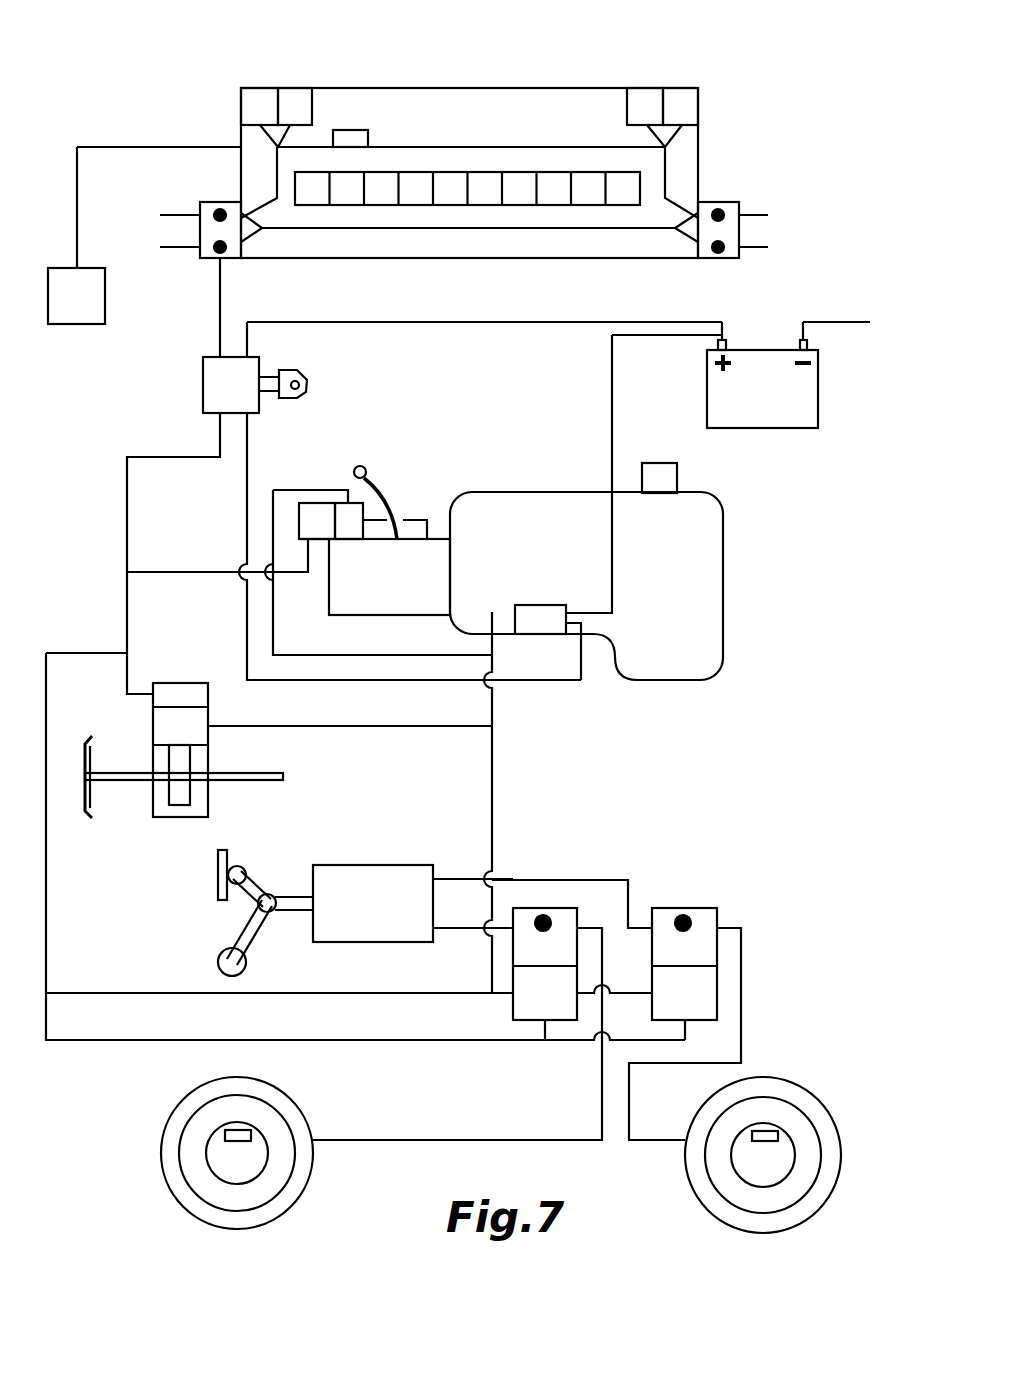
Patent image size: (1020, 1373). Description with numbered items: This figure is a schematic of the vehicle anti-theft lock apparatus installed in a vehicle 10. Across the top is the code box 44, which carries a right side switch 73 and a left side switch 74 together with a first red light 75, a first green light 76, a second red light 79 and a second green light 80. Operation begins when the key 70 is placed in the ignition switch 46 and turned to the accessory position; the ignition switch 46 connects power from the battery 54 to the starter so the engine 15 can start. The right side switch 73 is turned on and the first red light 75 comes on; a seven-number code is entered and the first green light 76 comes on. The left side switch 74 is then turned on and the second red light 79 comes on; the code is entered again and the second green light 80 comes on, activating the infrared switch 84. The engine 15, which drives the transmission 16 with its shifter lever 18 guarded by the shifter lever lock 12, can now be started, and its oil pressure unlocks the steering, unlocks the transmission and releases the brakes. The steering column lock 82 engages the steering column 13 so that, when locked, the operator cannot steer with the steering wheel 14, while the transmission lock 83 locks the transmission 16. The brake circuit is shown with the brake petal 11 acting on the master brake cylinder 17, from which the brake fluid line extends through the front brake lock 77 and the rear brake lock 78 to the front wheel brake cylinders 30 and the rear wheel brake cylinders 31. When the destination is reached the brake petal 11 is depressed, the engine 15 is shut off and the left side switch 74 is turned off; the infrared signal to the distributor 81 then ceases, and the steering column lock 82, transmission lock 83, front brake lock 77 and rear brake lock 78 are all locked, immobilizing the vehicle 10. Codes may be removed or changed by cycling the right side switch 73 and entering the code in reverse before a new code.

The vehicle 10 is at (617, 773).
The brake petal 11 is at (222, 865).
The shifter lever lock 12 is at (345, 528).
The steering column 13 is at (123, 768).
The steering wheel 14 is at (82, 800).
The engine 15 is at (586, 586).
The transmission 16 is at (374, 577).
The master brake cylinder 17 is at (363, 882).
The shifter lever 18 is at (383, 485).
The front wheel brake cylinders 30 is at (763, 1133).
The rear wheel brake cylinders 31 is at (235, 1135).
The code box 44 is at (577, 113).
The ignition switch 46 is at (215, 385).
The battery 54 is at (793, 417).
The key 70 is at (297, 377).
The right side switch 73 is at (730, 212).
The left side switch 74 is at (208, 212).
The first red light 75 is at (642, 100).
The first green light 76 is at (683, 100).
The front brake lock 77 is at (525, 1005).
The rear brake lock 78 is at (702, 982).
The second red light 79 is at (300, 100).
The second green light 80 is at (262, 100).
The distributor 81 is at (663, 480).
The steering column lock 82 is at (175, 690).
The transmission lock 83 is at (322, 510).
The infrared switch 84 is at (98, 305).